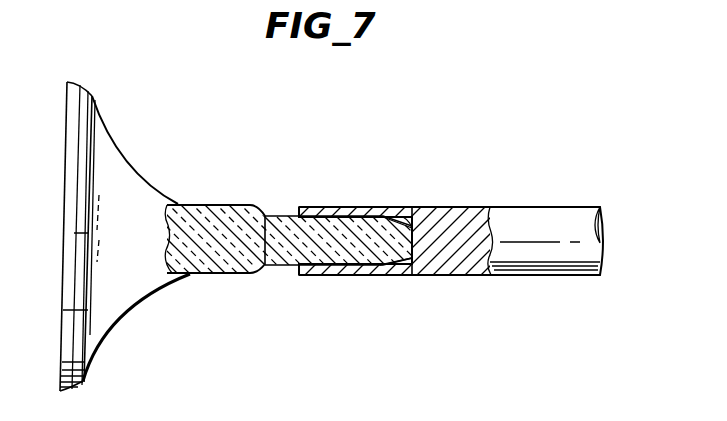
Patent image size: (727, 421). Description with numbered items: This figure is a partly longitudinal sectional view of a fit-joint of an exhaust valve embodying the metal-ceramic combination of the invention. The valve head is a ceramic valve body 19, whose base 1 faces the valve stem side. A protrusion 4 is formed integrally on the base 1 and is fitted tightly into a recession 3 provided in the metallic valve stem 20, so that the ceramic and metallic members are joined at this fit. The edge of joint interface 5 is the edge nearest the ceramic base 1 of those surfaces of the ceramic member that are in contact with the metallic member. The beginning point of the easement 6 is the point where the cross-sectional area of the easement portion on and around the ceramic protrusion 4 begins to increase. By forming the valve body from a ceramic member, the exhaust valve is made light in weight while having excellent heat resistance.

The ceramic valve body 19 is at (133, 168).
The ceramic base 1 is at (210, 210).
The beginning point of the easement 6 is at (265, 216).
The ceramic protrusion 4 is at (367, 217).
The recession 3 is at (403, 218).
The edge of joint interface 5 is at (327, 207).
The metallic valve stem 20 is at (560, 217).